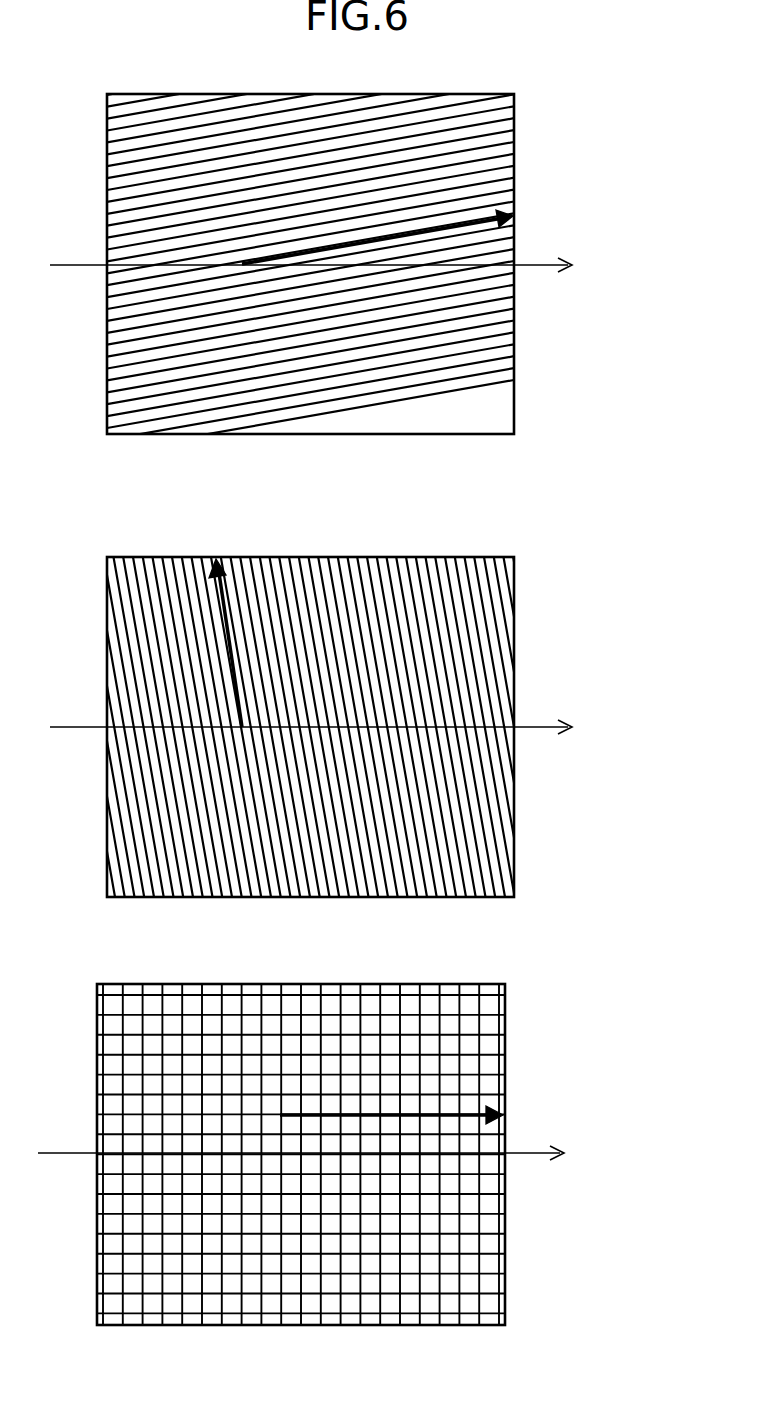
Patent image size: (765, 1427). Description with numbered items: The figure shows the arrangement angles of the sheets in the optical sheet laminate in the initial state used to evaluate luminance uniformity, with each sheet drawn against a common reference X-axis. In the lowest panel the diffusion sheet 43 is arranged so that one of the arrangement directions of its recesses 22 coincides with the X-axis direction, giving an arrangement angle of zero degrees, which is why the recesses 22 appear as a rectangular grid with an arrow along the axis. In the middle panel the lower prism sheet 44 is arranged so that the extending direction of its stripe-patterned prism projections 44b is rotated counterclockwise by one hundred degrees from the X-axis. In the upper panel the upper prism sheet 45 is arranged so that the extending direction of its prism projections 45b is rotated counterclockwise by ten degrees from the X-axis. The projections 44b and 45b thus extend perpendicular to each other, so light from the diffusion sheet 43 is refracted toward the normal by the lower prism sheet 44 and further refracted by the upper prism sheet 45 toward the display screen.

The upper prism sheet 45 is at (353, 226).
The prism projections 45b is at (445, 310).
The lower prism sheet 44 is at (353, 711).
The prism projections 44b is at (455, 828).
The diffusion sheet 43 is at (347, 1154).
The recesses 22 is at (452, 1250).